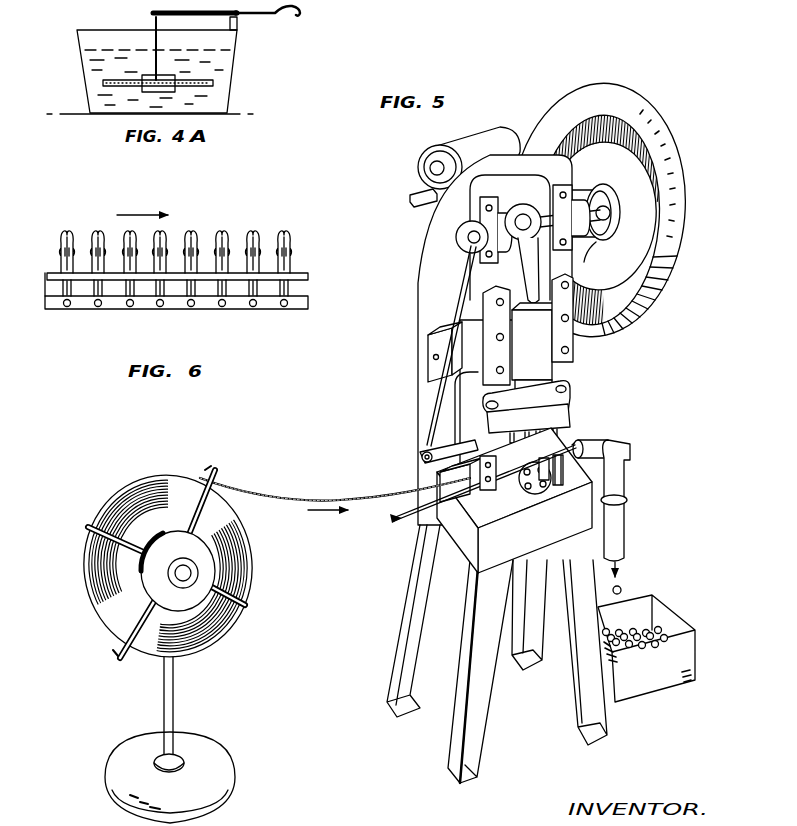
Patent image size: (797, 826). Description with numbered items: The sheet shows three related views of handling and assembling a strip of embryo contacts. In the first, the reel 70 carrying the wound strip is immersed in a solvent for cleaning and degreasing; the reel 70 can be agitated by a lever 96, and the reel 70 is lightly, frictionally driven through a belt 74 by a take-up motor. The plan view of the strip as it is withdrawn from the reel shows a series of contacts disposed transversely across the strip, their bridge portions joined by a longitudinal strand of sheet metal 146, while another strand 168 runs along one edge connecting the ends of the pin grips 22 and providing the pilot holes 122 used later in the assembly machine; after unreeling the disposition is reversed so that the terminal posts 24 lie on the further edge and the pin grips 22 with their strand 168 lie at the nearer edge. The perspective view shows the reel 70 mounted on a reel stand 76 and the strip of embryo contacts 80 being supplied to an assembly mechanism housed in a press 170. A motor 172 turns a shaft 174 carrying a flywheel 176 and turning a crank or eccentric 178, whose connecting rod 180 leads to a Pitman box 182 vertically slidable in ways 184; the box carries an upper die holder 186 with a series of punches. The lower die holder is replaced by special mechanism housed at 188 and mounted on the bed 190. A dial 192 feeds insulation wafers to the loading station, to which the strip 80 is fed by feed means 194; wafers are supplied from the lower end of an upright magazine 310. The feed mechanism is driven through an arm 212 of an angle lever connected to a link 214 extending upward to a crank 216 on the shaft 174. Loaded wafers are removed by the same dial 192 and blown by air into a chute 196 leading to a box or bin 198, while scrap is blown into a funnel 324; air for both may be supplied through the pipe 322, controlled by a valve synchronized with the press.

In FIG. 4A, the reel 70 is at (232, 90).
In FIG. 5, the reel 70 is at (248, 540).
In FIG. 4A, the belt 74 is at (228, 67).
In FIG. 4A, the lever 96 is at (300, 17).
In FIG. 6, the strand of sheet metal 146 is at (52, 272).
In FIG. 6, the terminal post 24 is at (290, 236).
In FIG. 6, the pin grip 22 is at (292, 288).
In FIG. 6, the strand 168 is at (86, 318).
In FIG. 6, the pilot holes 122 is at (130, 318).
In FIG. 5, the motor 172 is at (474, 131).
In FIG. 5, the flywheel 176 is at (652, 148).
In FIG. 5, the shaft 174 is at (596, 229).
In FIG. 5, the crank or eccentric 178 is at (527, 205).
In FIG. 5, the crank 216 is at (466, 245).
In FIG. 5, the connecting rod 180 is at (530, 268).
In FIG. 5, the press 170 is at (418, 300).
In FIG. 5, the Pitman box 182 is at (535, 356).
In FIG. 5, the ways 184 is at (573, 346).
In FIG. 5, the upper die holder 186 is at (568, 416).
In FIG. 5, the funnel 324 is at (580, 442).
In FIG. 5, the chute 196 is at (625, 471).
In FIG. 5, the box or bin 198 is at (697, 662).
In FIG. 5, the bed 190 is at (508, 556).
In FIG. 5, the special mechanism housing / bottom die or dial holder 188 is at (494, 516).
In FIG. 5, the feed means 194 is at (495, 486).
In FIG. 5, the lower end of magazine 310 is at (548, 500).
In FIG. 5, the dial 192 is at (561, 490).
In FIG. 5, the air tube / pipe 322 is at (415, 530).
In FIG. 5, the strip of embryo contacts 80 is at (340, 497).
In FIG. 5, the link 214 is at (428, 400).
In FIG. 5, the arm 212 is at (420, 459).
In FIG. 5, the reel stand 76 is at (175, 698).